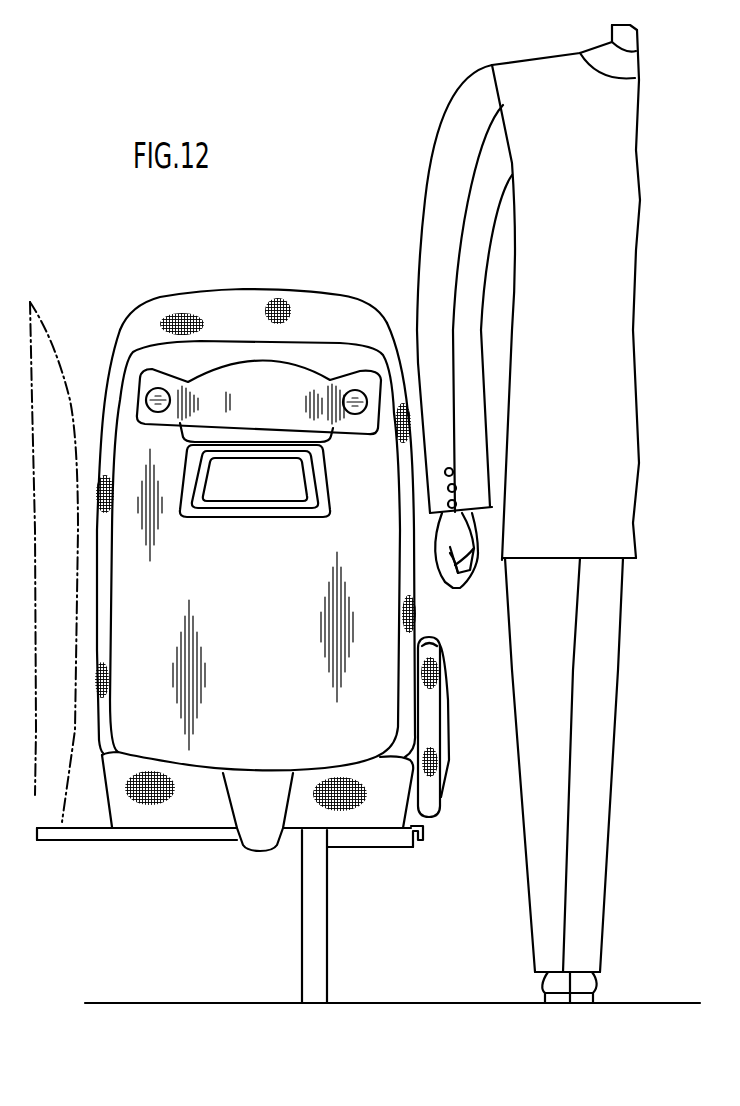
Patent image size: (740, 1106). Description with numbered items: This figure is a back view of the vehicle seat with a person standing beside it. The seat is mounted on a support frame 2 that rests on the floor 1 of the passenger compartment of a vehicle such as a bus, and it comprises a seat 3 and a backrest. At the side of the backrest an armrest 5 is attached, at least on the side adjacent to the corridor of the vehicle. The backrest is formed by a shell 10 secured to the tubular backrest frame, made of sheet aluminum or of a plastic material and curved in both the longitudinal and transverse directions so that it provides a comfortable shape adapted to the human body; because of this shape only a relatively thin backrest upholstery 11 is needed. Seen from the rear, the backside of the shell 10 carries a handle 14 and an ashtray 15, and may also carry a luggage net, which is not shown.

The floor 1 is at (410, 1003).
The support frame 2 is at (317, 903).
The seat 3 is at (393, 805).
The armrest 5 is at (430, 793).
The shell 10 is at (130, 565).
The backrest upholstery 11 is at (168, 318).
The handle 14 is at (222, 395).
The ashtray 15 is at (260, 470).